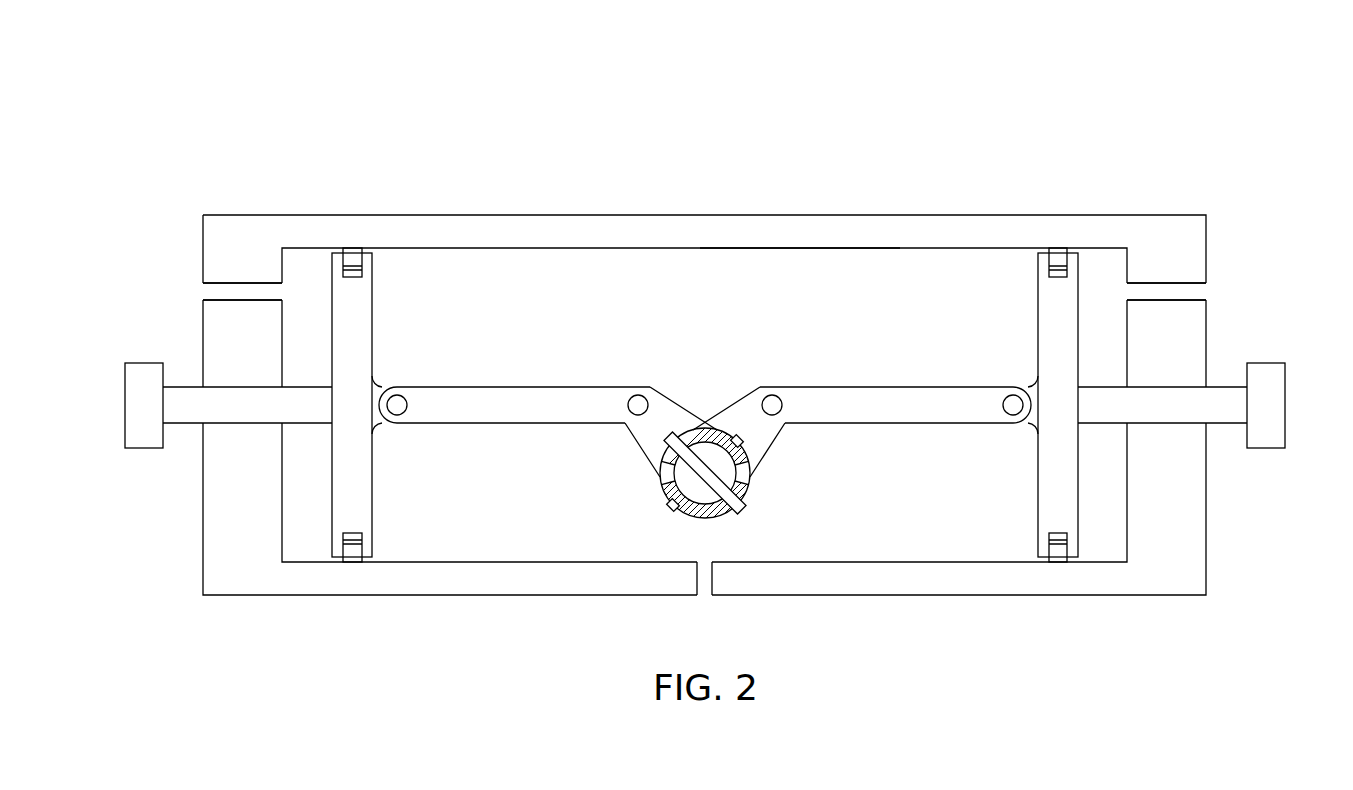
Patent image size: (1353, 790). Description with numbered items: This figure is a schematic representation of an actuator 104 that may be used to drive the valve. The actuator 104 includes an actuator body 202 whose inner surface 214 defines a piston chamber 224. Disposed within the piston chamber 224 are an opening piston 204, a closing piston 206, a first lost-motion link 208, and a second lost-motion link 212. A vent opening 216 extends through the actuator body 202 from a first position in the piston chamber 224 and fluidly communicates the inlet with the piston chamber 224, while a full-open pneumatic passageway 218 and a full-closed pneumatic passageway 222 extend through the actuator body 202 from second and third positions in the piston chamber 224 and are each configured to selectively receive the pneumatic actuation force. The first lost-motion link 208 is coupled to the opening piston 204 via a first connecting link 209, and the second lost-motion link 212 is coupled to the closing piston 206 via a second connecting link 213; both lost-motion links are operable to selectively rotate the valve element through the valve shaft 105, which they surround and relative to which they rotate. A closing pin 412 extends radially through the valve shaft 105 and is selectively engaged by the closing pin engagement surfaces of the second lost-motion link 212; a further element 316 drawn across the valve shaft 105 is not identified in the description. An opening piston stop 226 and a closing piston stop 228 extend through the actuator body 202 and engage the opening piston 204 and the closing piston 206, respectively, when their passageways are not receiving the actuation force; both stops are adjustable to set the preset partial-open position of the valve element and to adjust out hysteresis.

The actuator 104 is at (144, 88).
The valve shaft 105 is at (688, 484).
The actuator body 202 is at (703, 215).
The opening piston 204 is at (373, 315).
The closing piston 206 is at (1043, 320).
The first lost-motion link 208 is at (671, 381).
The first connecting link 209 is at (507, 387).
The second lost-motion link 212 is at (739, 385).
The second connecting link 213 is at (860, 387).
The inner surface 214 is at (783, 250).
The vent opening 216 is at (705, 597).
The full-open pneumatic passageway 218 is at (210, 290).
The full-closed pneumatic passageway 222 is at (1200, 292).
The piston chamber 224 is at (931, 502).
The opening piston stop 226 is at (125, 408).
The closing piston stop 228 is at (1285, 406).
The shaft 316 is at (744, 506).
The closing pin 412 is at (742, 441).